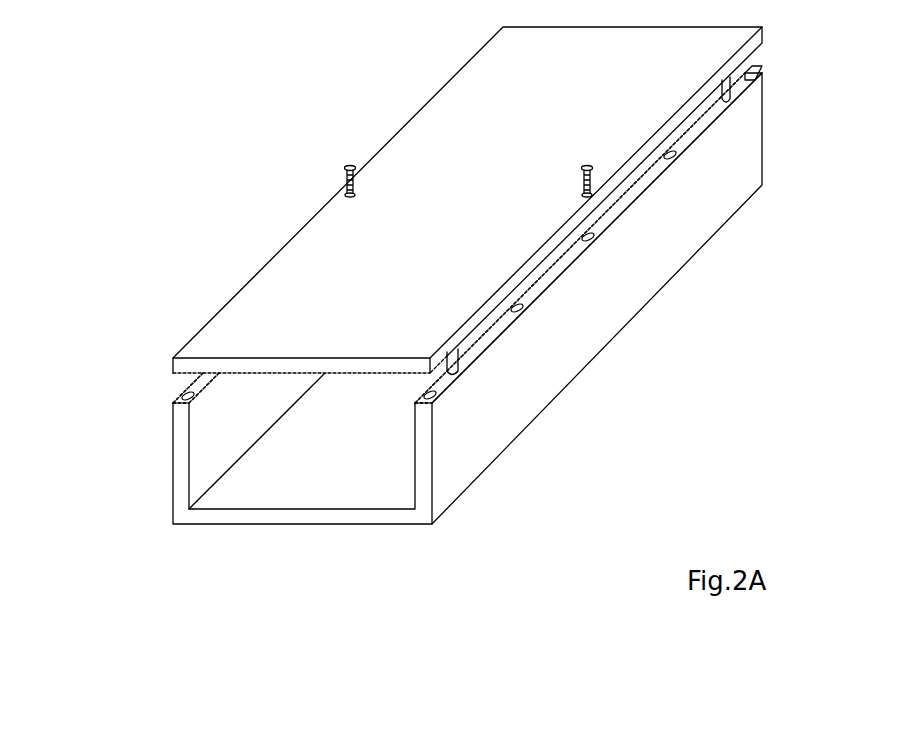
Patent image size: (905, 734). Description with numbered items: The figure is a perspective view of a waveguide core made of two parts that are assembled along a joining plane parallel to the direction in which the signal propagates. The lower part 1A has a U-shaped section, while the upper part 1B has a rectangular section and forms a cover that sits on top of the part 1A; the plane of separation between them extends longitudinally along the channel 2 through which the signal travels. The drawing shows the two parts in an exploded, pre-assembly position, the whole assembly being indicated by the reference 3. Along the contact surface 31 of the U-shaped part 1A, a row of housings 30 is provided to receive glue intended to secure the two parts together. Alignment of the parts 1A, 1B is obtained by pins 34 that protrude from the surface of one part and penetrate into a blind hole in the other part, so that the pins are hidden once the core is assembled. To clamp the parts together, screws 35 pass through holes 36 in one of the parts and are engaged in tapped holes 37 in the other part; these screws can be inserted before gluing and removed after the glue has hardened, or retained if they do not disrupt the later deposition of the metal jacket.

The part 1A is at (172, 457).
The part 1B is at (171, 362).
The channel 2 is at (335, 482).
The housing assembly 3 is at (187, 568).
The housings 30 is at (183, 393).
The contact surface 31 is at (173, 401).
The pins 34 is at (458, 363).
The screws 35 is at (345, 168).
The holes 36 is at (343, 195).
The tapped holes 37 is at (592, 238).